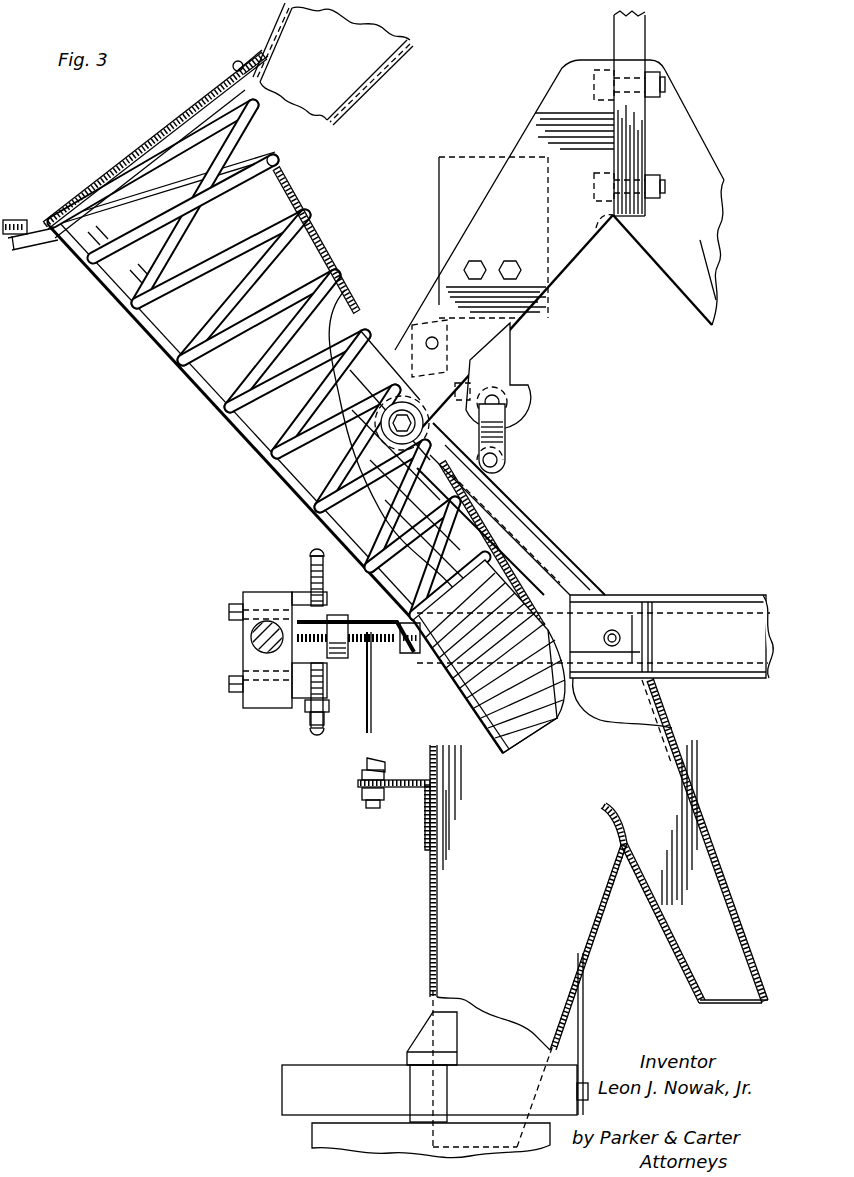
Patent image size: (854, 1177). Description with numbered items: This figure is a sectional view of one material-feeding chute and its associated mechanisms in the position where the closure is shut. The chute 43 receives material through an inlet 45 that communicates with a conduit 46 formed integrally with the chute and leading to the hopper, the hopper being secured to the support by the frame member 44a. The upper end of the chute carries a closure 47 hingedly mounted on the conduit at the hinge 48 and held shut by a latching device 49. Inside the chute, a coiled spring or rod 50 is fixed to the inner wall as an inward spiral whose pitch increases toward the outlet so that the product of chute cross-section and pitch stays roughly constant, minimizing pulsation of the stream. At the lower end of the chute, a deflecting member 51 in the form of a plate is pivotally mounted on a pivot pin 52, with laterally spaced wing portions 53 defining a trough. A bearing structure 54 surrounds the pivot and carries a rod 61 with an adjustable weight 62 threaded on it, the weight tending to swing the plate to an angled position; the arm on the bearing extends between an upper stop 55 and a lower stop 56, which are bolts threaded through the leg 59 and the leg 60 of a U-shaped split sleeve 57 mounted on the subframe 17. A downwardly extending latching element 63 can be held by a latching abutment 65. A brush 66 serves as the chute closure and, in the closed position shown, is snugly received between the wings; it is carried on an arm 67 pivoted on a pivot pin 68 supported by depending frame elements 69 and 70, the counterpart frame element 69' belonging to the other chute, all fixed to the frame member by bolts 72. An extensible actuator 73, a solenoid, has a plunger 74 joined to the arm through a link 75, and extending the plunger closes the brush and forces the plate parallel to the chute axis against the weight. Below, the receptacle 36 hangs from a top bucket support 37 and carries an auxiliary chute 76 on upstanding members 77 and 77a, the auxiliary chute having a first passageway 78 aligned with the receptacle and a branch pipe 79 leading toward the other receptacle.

The chute 43 is at (215, 405).
The coiled spring or rod 50 is at (178, 364).
The closure 47 is at (145, 145).
The inlet 45 is at (296, 162).
The latching device 49 is at (20, 222).
The hinge 48 is at (238, 62).
The conduit 46 is at (362, 97).
The wing portions 53 is at (575, 688).
The frame element 69 is at (559, 246).
The frame element 70 is at (607, 240).
The frame element 69' is at (686, 296).
The frame member 44a is at (645, 32).
The bolts 72 is at (665, 86).
The extensible actuator 73 is at (439, 200).
The arm 67 is at (516, 520).
The pivot pin 68 is at (410, 410).
The plunger 74 is at (512, 363).
The link 75 is at (507, 431).
The deflecting member 51 is at (472, 697).
The brush 66 is at (518, 712).
The pivot pin 52 is at (425, 652).
The bearing structure 54 is at (404, 655).
The subframe 17 is at (243, 637).
The split sleeve 57 is at (243, 660).
The leg 59 is at (304, 594).
The upper stop 55 is at (311, 554).
The lower stop 56 is at (309, 729).
The leg 60 is at (332, 714).
The weight 62 is at (340, 615).
The rod 61 is at (387, 648).
The latching element 63 is at (372, 715).
The latching abutment 65 is at (366, 764).
The auxiliary chute 76 is at (430, 895).
The first passageway 78 is at (473, 997).
The branch pipe 79 is at (712, 852).
The upstanding member 77 is at (582, 1032).
The upstanding member 77a is at (420, 1030).
The top bucket support 37 is at (293, 1074).
The receptacle 36 is at (314, 1135).